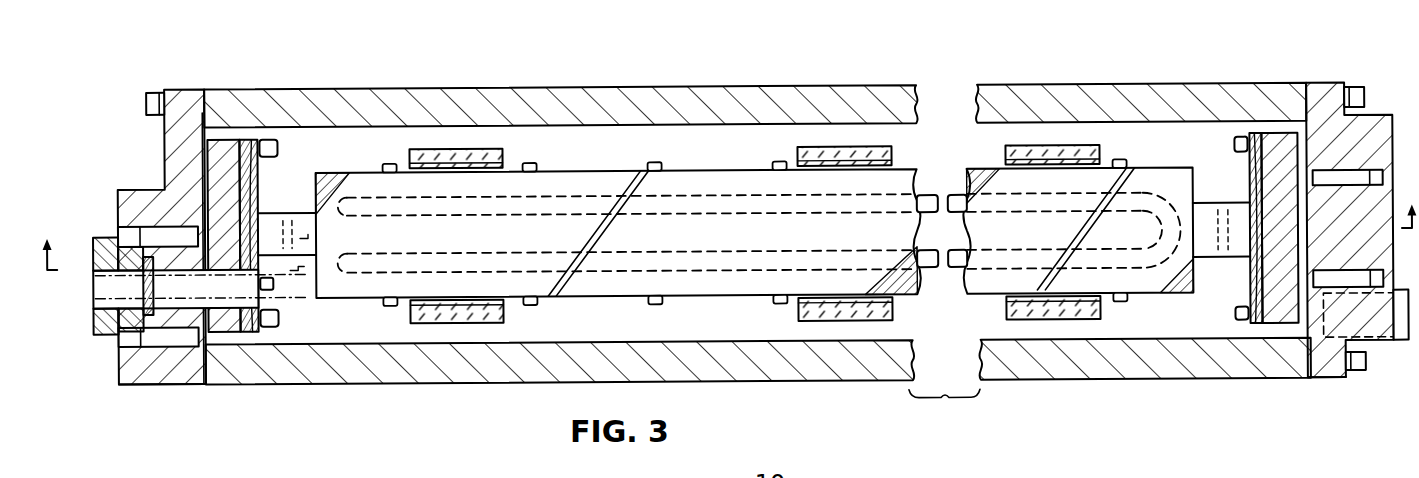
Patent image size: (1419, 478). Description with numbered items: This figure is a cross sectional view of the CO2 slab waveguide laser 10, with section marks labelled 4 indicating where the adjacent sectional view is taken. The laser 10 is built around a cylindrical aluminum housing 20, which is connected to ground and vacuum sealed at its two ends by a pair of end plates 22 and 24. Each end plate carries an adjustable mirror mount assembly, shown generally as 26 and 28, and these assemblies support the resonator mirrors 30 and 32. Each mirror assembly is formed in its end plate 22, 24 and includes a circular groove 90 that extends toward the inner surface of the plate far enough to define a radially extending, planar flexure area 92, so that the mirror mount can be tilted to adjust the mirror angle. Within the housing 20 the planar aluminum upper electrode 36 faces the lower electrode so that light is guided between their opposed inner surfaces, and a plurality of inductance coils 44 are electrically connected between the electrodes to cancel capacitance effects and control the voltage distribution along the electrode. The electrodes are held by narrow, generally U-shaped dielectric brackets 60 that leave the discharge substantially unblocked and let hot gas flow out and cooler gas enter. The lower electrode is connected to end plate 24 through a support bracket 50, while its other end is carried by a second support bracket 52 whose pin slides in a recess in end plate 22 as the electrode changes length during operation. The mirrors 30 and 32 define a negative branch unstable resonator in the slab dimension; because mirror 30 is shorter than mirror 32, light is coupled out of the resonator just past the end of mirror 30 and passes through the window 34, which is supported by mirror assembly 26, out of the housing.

The CO2 slab waveguide laser 10 is at (662, 74).
The cylindrical aluminum housing 20 is at (365, 86).
The end plate 22 is at (183, 86).
The end plate 24 is at (1325, 86).
The adjustable mirror mount assembly 26 is at (106, 360).
The adjustable mirror mount assembly 28 is at (1326, 394).
The resonator mirror 30 is at (259, 194).
The resonator mirror 32 is at (1247, 190).
The window 34 is at (96, 316).
The upper electrode 36 is at (560, 170).
The inductance coils 44 is at (530, 303).
The support bracket 50 is at (1220, 262).
The second support bracket 52 is at (289, 214).
The dielectric brackets 60 is at (504, 148).
The circular groove 90 is at (115, 240).
The flexure area 92 is at (182, 221).
The section line 4- 4 is at (729, 219).